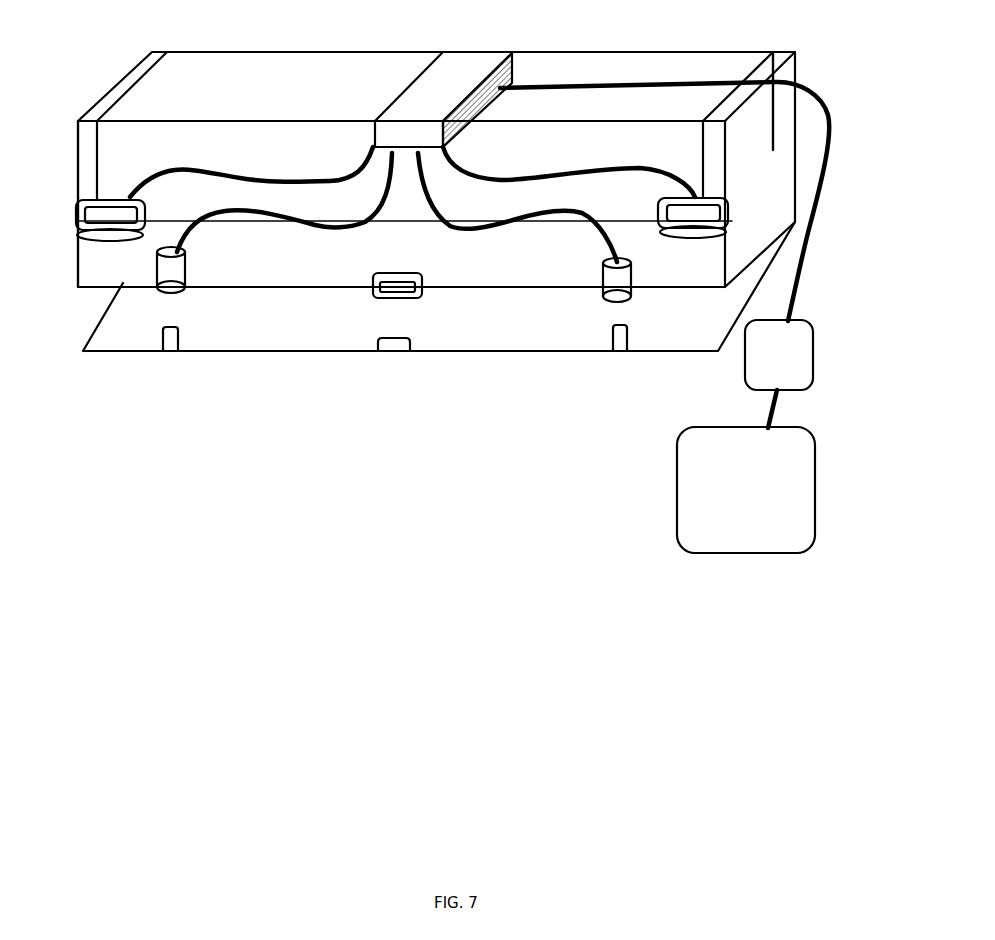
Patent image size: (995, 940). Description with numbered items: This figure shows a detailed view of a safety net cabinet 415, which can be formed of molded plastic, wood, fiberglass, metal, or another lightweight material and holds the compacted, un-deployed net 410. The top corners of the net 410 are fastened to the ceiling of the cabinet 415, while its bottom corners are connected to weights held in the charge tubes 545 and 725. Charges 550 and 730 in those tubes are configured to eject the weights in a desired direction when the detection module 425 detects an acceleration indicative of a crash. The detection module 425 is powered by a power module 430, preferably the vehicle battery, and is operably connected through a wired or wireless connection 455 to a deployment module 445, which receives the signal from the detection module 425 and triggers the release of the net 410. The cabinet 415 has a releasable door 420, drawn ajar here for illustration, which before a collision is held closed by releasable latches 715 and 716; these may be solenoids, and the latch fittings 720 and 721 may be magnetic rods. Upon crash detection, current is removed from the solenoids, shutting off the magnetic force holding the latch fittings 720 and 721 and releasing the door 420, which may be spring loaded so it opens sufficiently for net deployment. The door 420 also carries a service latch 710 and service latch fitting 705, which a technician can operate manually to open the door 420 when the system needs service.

The net 410 is at (150, 109).
The deployment module 445 is at (455, 58).
The cabinet 415 is at (806, 59).
The connection 455 is at (841, 157).
The charge 550 is at (95, 214).
The charge tube 545 is at (66, 245).
The releasable latch 715 is at (142, 296).
The releasable latch 716 is at (586, 304).
The releasable door 420 is at (254, 331).
The latch fitting 720 is at (160, 356).
The latch fitting 721 is at (606, 357).
The service latch 710 is at (360, 308).
The service latch fitting 705 is at (387, 360).
The charge tube 725 is at (703, 250).
The charge 730 is at (681, 230).
The power module 430 is at (779, 355).
The detection module 425 is at (746, 490).